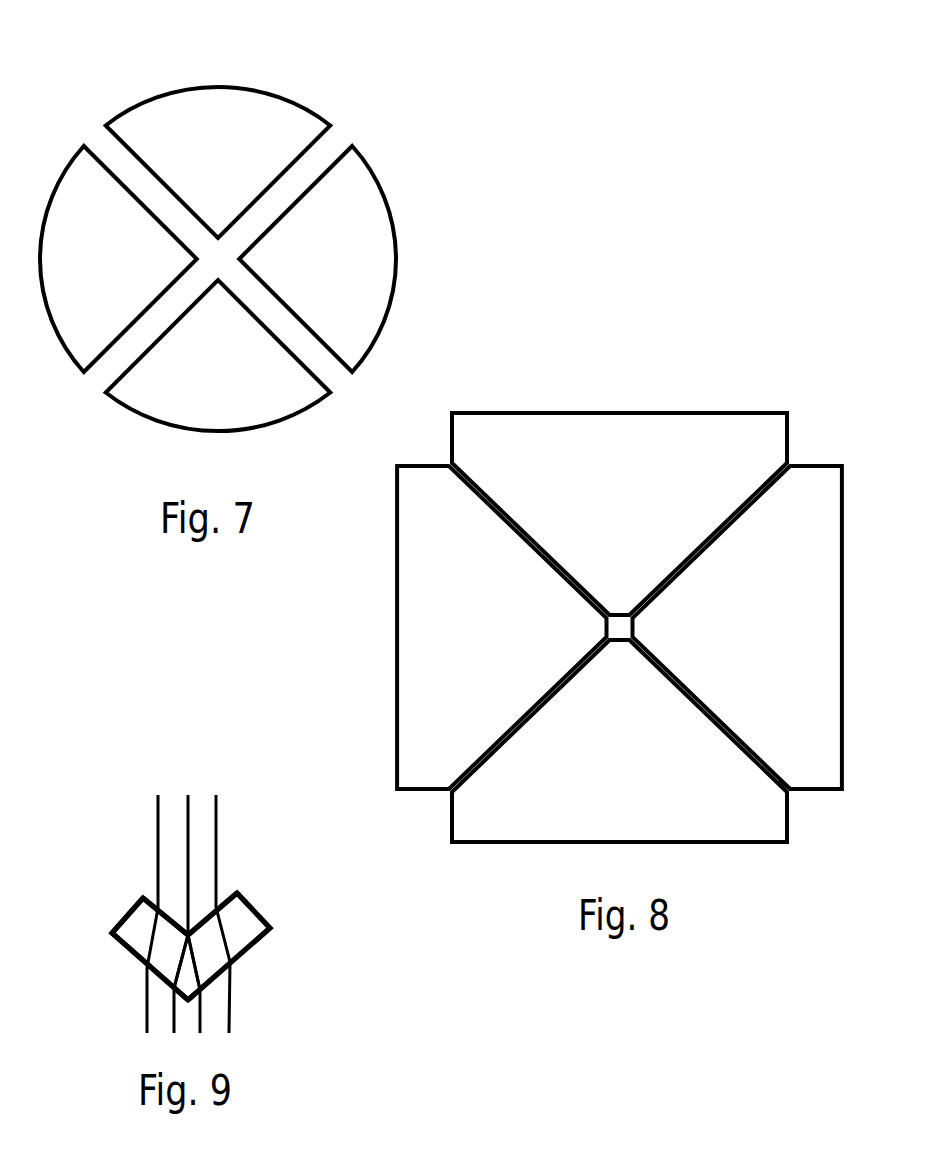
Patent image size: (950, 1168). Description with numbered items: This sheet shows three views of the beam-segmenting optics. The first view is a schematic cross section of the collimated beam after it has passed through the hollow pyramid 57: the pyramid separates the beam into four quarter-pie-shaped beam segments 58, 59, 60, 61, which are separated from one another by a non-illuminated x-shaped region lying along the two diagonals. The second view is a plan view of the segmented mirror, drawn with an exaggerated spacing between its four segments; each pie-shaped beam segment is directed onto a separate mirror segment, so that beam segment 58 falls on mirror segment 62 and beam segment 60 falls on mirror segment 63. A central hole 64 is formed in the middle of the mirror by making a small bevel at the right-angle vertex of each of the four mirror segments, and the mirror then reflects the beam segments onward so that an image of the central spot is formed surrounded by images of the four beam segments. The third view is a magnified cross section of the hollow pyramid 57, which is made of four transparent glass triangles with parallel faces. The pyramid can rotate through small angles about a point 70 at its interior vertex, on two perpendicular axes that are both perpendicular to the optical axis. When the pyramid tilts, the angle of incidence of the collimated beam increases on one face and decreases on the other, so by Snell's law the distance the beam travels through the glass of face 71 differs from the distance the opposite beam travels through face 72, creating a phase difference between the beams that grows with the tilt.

In FIG. 9, the hollow pyramid 57 is at (262, 918).
In FIG. 7, the beam segment 58 is at (68, 354).
In FIG. 7, the beam segment 59 is at (220, 86).
In FIG. 7, the beam segment 60 is at (400, 270).
In FIG. 7, the beam segment 61 is at (243, 437).
In FIG. 8, the mirror segment 62 is at (396, 632).
In FIG. 8, the mirror segment 63 is at (820, 792).
In FIG. 8, the central hole 64 is at (618, 625).
In FIG. 9, the point 70 is at (184, 925).
In FIG. 9, the face 71 is at (132, 955).
In FIG. 9, the face 72 is at (248, 950).